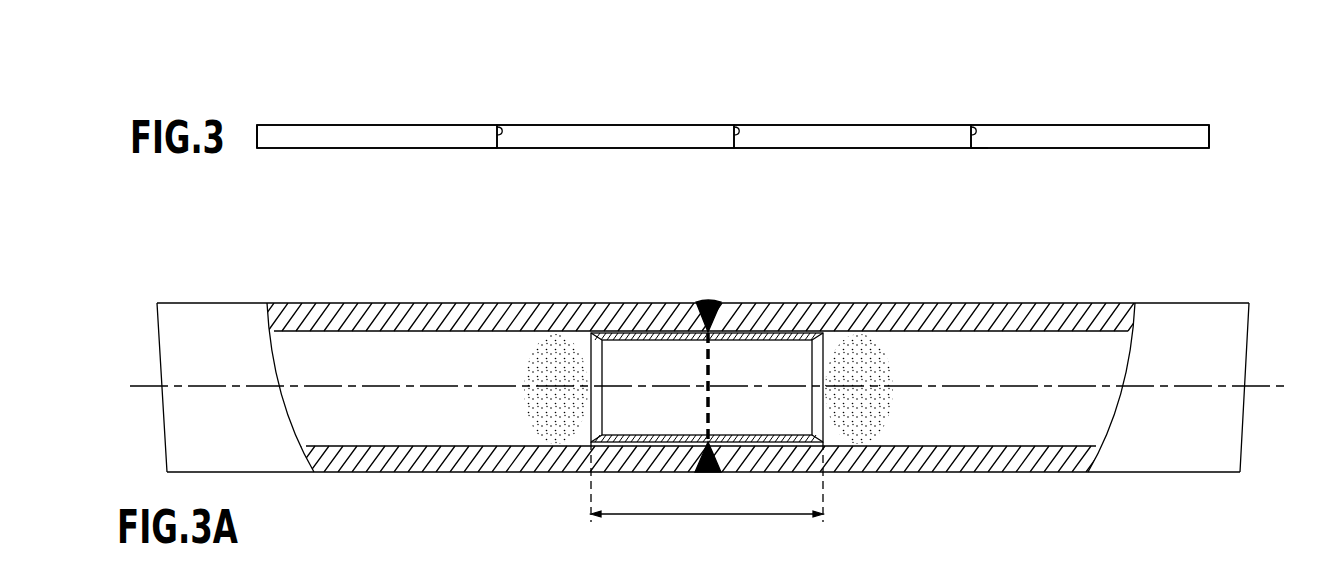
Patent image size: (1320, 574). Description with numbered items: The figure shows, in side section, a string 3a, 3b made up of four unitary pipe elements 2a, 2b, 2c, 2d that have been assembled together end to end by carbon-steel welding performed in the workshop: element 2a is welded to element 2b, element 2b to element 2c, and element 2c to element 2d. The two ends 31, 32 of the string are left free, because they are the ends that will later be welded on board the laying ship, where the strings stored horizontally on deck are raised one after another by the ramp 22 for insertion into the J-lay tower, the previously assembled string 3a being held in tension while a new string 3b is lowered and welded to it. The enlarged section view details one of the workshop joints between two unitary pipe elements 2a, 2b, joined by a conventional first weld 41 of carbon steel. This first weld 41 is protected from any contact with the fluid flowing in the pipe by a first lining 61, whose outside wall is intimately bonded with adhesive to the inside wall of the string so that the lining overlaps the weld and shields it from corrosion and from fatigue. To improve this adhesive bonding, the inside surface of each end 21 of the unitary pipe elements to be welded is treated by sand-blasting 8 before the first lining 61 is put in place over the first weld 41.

In FIG. 3, the unitary pipe element 2a is at (365, 138).
In FIG. 3A, the unitary pipe element 2a is at (368, 313).
In FIG. 3, the unitary pipe element 2b is at (613, 138).
In FIG. 3A, the unitary pipe element 2b is at (942, 313).
In FIG. 3, the unitary pipe element 2c is at (853, 138).
In FIG. 3, the unitary pipe element 2d is at (1083, 138).
In FIG. 3, the end of the unitary pipe element 21 is at (265, 138).
In FIG. 3, the ramp 22 is at (487, 138).
In FIG. 3, the end of the string 31 is at (273, 164).
In FIG. 3, the end of the string 32 is at (1207, 164).
In FIG. 3, the string 3a is at (320, 91).
In FIG. 3, the string 3b is at (733, 105).
In FIG. 3, the first weld 41 is at (502, 133).
In FIG. 3A, the first weld 41 is at (710, 298).
In FIG. 3A, the first lining 61 is at (747, 335).
In FIG. 3A, the sand-blasted zone 8 is at (855, 432).